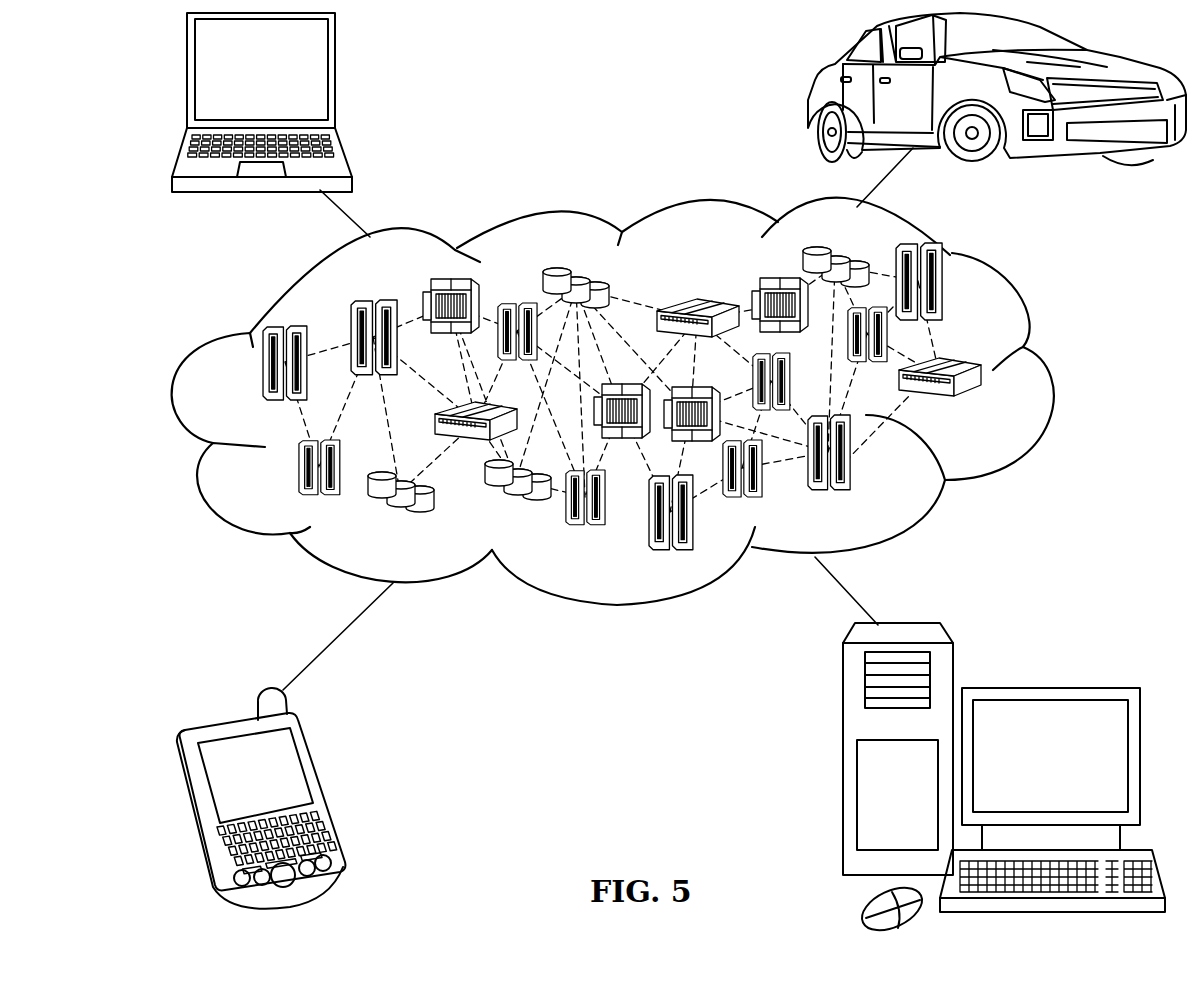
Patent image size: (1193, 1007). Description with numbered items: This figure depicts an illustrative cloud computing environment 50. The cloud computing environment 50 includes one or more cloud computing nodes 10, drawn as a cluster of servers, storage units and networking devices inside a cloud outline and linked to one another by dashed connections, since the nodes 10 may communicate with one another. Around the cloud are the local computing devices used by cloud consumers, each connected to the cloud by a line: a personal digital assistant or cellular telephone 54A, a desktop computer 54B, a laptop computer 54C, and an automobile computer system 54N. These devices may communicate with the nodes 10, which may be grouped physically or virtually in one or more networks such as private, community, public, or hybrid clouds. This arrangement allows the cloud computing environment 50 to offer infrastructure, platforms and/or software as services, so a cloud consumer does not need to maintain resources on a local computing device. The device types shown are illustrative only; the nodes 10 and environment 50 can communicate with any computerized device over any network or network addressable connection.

The cloud computing nodes 10 is at (983, 408).
The cloud computing environment 50 is at (1053, 372).
The personal digital assistant or cellular telephone 54A is at (325, 787).
The desktop computer 54B is at (1048, 687).
The laptop computer 54C is at (335, 78).
The automobile computer system 54N is at (812, 97).